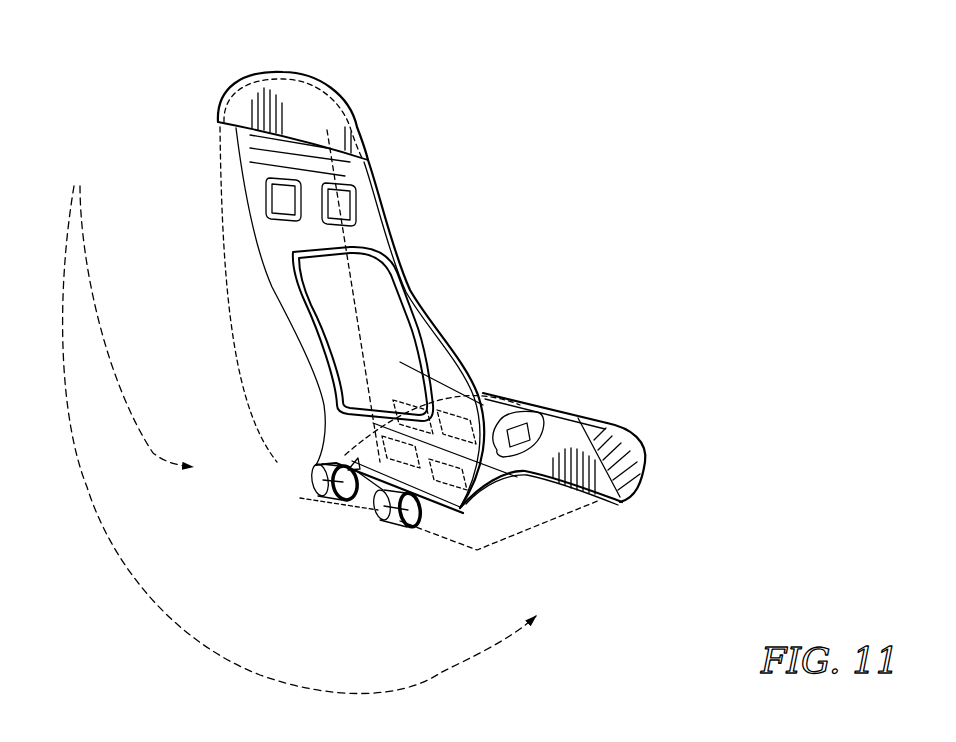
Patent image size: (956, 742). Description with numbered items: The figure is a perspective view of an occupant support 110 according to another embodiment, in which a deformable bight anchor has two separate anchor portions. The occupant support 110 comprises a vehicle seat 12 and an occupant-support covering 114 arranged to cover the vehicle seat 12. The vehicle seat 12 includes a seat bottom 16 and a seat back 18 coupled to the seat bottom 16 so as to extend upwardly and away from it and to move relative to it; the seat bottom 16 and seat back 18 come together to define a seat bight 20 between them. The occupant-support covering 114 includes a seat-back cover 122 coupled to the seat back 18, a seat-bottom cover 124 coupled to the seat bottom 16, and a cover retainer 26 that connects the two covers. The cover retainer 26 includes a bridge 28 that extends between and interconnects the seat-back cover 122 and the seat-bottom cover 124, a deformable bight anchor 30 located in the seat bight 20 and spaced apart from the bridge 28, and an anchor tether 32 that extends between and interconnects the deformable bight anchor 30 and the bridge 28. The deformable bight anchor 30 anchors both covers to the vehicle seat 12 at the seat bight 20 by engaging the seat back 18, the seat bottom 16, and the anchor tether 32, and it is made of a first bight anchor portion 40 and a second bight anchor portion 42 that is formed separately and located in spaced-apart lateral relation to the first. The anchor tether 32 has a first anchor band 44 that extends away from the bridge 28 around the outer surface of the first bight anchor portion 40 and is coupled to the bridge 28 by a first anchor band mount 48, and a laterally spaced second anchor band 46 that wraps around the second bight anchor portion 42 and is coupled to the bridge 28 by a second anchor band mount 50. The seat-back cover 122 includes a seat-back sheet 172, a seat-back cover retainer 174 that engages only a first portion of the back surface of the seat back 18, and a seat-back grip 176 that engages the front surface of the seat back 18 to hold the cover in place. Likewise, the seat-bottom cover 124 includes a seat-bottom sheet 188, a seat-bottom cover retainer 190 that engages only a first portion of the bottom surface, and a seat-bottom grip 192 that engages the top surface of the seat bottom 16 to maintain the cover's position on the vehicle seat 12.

The occupant support 110 is at (119, 115).
The vehicle seat 12 is at (299, 427).
The seat bottom 16 is at (597, 535).
The seat back 18 is at (226, 290).
The seat bight 20 is at (300, 463).
The cover retainer 26 is at (440, 524).
The bridge 28 is at (500, 490).
The deformable bight anchor 30 is at (441, 642).
The anchor tether 32 is at (412, 594).
The first bight anchor portion 40 is at (312, 465).
The second bight anchor portion 42 is at (420, 521).
The first anchor band 44 is at (322, 497).
The second anchor band 46 is at (380, 521).
The first anchor band mount 48 is at (341, 500).
The second anchor band mount 50 is at (410, 528).
The occupant-support covering 114 is at (490, 606).
The seat-back cover 122 is at (412, 265).
The seat-bottom cover 124 is at (533, 386).
The seat-back sheet 172 is at (323, 357).
The seat-back cover retainer 174 is at (233, 130).
The seat-back grip 176 is at (277, 282).
The seat-bottom sheet 188 is at (528, 426).
The seat-bottom cover retainer 190 is at (597, 480).
The seat-bottom grip 192 is at (523, 417).